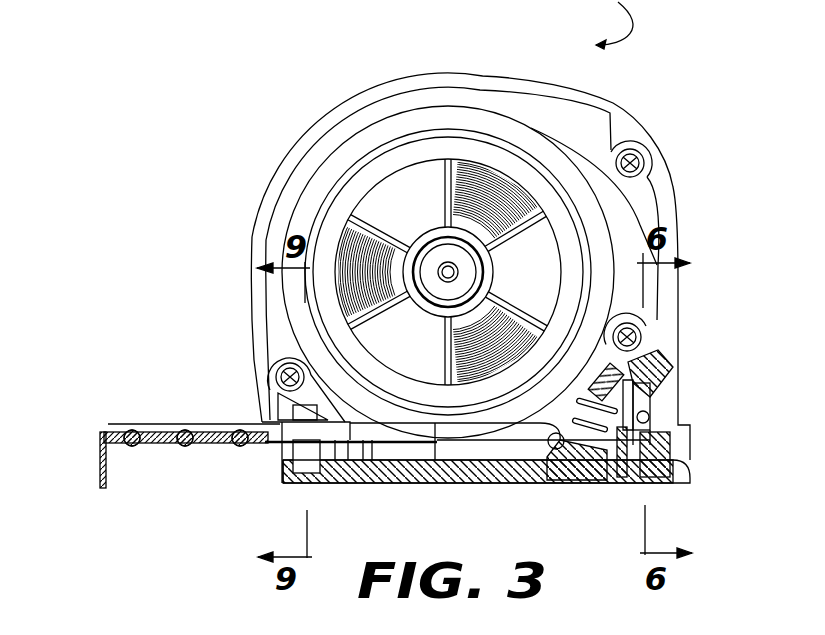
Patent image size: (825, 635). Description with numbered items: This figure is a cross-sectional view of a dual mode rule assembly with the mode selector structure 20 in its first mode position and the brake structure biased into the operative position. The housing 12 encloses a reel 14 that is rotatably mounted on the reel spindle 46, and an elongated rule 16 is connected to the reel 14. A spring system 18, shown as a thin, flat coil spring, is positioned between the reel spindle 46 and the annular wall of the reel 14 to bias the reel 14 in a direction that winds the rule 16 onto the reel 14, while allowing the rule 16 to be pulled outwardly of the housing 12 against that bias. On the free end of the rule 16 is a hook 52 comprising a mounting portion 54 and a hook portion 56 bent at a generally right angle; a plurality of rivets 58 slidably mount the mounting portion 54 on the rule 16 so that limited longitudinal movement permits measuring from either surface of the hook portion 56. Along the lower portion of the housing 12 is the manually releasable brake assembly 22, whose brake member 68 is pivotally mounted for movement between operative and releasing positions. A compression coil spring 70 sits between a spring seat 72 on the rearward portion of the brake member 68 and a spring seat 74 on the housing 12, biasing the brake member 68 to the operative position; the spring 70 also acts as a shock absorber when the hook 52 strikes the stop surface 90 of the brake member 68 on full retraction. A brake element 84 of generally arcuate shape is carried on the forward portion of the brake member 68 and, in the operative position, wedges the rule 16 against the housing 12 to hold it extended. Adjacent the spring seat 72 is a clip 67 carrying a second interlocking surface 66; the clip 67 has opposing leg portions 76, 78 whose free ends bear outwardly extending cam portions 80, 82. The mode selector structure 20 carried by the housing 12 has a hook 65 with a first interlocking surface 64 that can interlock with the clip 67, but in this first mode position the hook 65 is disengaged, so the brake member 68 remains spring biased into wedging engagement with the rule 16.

The housing 12 is at (612, 112).
The reel 14 is at (332, 318).
The elongated rule 16 is at (215, 445).
The spring system 18 is at (481, 197).
The mode selector structure 20 is at (660, 385).
The brake assembly 22 is at (406, 484).
The reel spindle 46 is at (445, 265).
The hook 52 is at (106, 482).
The mounting portion 54 is at (165, 443).
The hook portion 56 is at (100, 440).
The rivets 58 is at (238, 430).
The first interlocking surface 64 is at (652, 392).
The hook 65 is at (662, 410).
The second interlocking surface 66 is at (652, 448).
The clip 67 is at (662, 437).
The brake member 68 is at (490, 484).
The compression coil spring 70 is at (592, 470).
The spring seat 72 is at (556, 470).
The spring seat 74 is at (655, 350).
The leg portion 76 is at (645, 462).
The leg portion 78 is at (682, 470).
The cam portion 80 is at (592, 400).
The cam portion 82 is at (657, 420).
The brake element 84 is at (318, 484).
The stop surface 90 is at (283, 470).